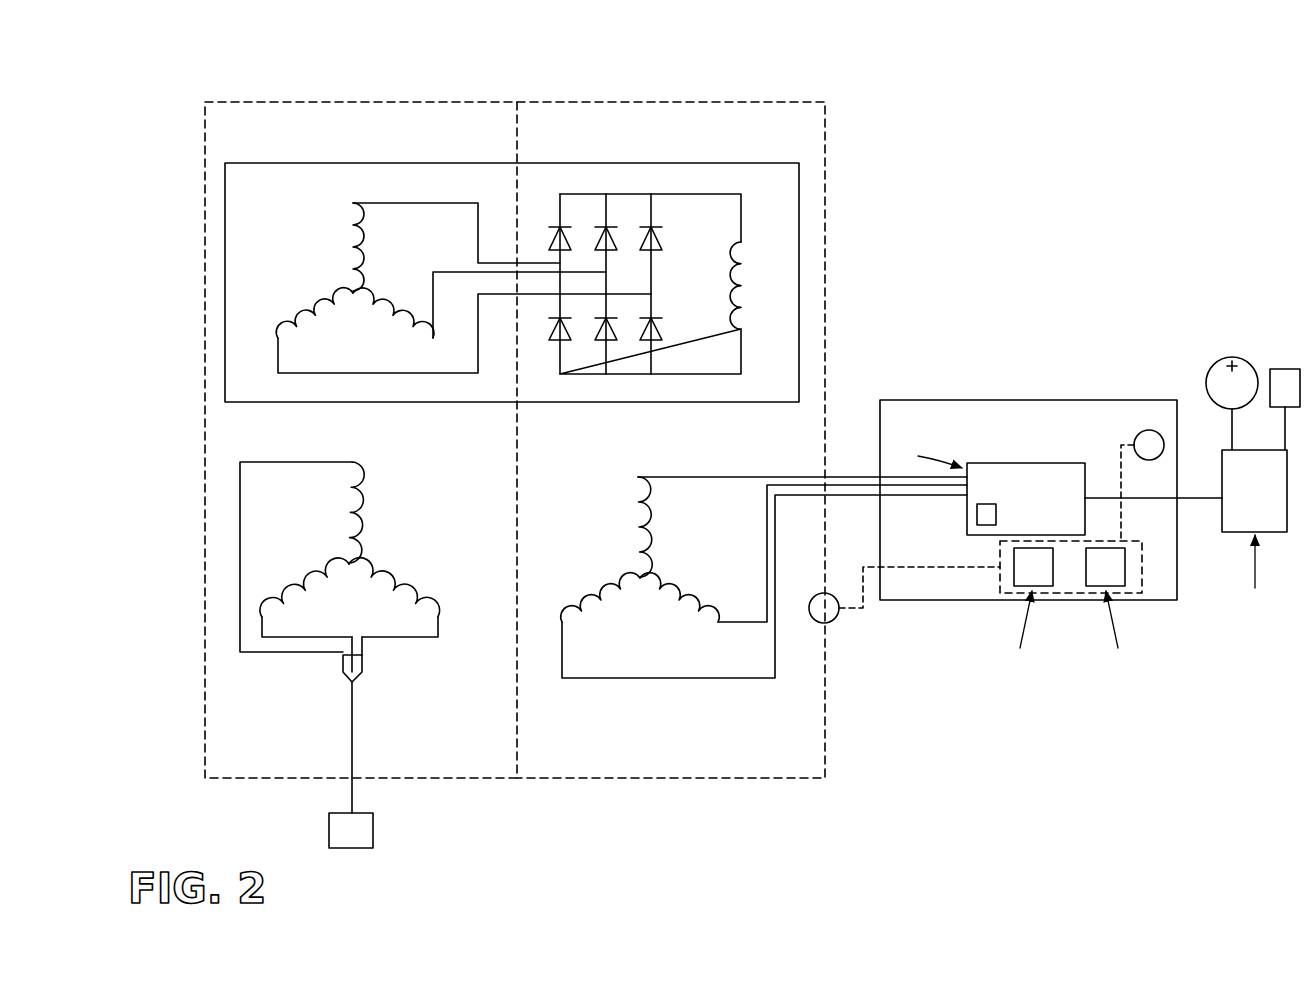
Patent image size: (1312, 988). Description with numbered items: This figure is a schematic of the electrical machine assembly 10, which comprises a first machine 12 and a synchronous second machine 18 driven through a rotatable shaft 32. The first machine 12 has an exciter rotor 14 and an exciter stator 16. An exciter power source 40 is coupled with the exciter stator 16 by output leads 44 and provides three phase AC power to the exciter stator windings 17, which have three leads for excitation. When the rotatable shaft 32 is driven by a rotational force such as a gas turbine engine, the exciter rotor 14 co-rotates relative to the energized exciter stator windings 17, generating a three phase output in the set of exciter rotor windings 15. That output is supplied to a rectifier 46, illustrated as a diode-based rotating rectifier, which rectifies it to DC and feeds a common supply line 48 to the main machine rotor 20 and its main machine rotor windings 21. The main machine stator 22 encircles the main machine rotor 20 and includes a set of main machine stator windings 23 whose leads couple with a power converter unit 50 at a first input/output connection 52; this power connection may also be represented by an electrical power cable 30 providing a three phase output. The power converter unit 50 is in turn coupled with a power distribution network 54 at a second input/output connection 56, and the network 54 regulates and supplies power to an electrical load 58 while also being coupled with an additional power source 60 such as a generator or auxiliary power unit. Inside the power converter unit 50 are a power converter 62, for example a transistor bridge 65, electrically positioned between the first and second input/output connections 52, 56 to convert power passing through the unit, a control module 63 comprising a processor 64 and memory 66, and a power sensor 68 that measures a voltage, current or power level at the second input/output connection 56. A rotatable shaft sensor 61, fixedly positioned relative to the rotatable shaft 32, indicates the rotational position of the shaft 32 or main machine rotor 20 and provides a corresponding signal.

The electrical machine assembly 10 is at (826, 55).
The first machine 12 is at (319, 99).
The exciter rotor 14 is at (347, 290).
The exciter rotor windings 15 is at (397, 290).
The exciter stator 16 is at (353, 561).
The exciter stator windings 17 is at (338, 530).
The synchronous second machine 18 is at (600, 99).
The main machine rotor 20 is at (745, 247).
The main machine rotor windings 21 is at (757, 289).
The main machine stator 22 is at (636, 576).
The main machine stator windings 23 is at (690, 568).
The electrical power cable 30 is at (843, 461).
The rotatable shaft 32 is at (222, 291).
The exciter power source 40 is at (329, 833).
The output leads 44 is at (342, 658).
The rectifier 46 is at (573, 194).
The common supply line 48 is at (677, 194).
The power converter unit 50 is at (1037, 430).
The first input/output connection 52 is at (873, 466).
The power distribution network 54 is at (1262, 501).
The second input/output connection 56 is at (1181, 472).
The electrical load 58 is at (1293, 398).
The power source 60 is at (1240, 402).
The rotatable shaft sensor 61 is at (833, 596).
The power converter 62 is at (1033, 515).
The control module 63 is at (996, 588).
The processor 64 is at (1041, 581).
The transistor bridge 65 is at (977, 510).
The memory 66 is at (1113, 581).
The power sensor 68 is at (1149, 430).